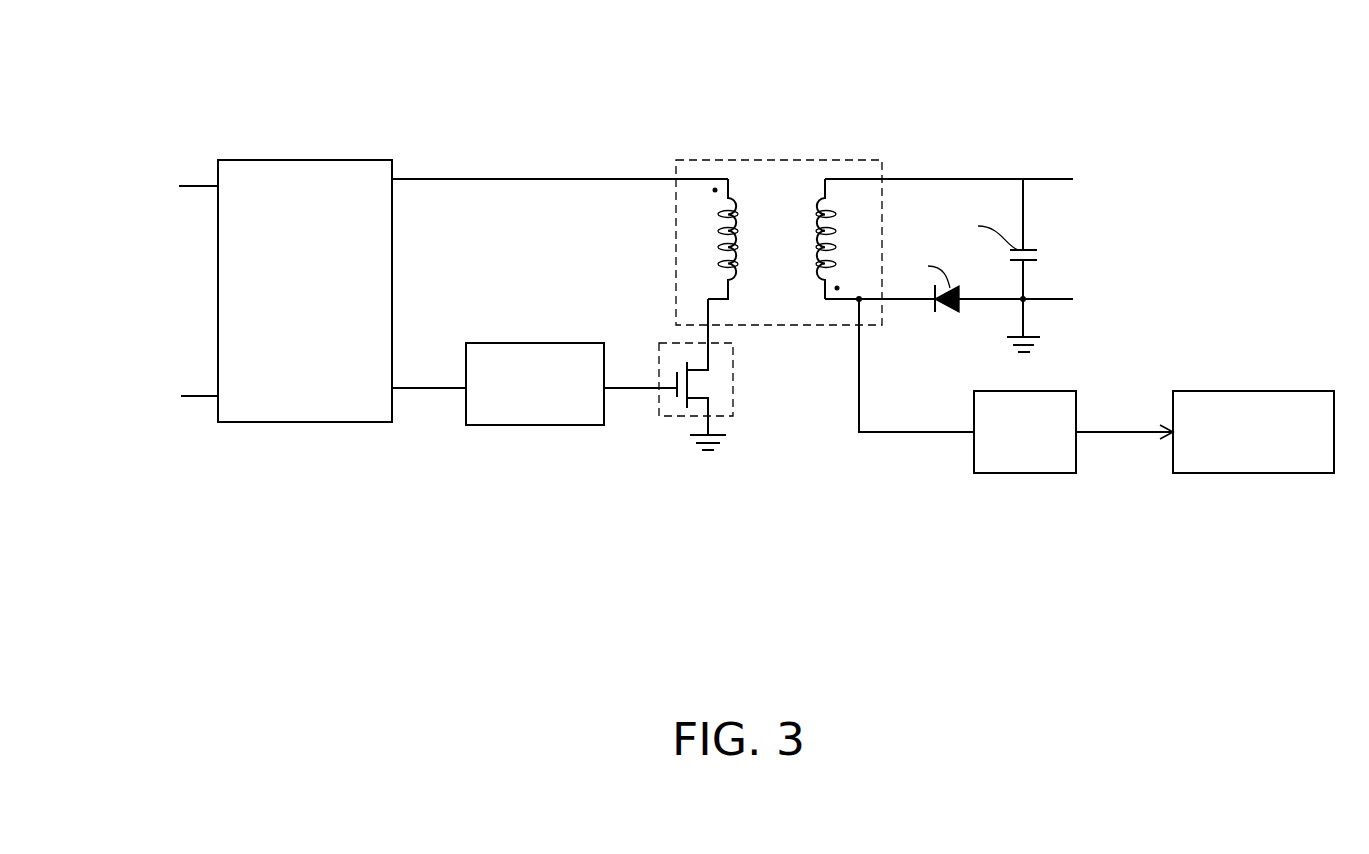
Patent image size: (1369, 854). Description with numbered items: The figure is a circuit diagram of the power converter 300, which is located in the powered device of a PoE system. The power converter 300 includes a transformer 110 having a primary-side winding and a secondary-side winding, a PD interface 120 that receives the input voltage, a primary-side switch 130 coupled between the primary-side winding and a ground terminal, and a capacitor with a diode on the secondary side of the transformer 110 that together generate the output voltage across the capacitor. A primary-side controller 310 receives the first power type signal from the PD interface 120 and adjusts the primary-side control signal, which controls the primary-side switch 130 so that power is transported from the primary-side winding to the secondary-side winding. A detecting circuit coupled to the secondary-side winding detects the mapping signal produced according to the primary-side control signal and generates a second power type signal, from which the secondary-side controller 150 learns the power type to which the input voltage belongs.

The power converter 300 is at (1187, 604).
The transformer 110 is at (758, 160).
The PD interface 120 is at (321, 160).
The primary-side switch 130 is at (735, 372).
The secondary-side controller 150 is at (1215, 391).
The primary-side controller 310 is at (560, 343).